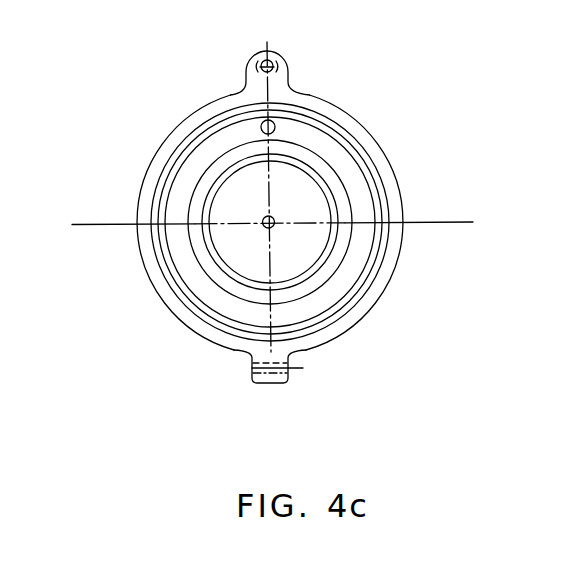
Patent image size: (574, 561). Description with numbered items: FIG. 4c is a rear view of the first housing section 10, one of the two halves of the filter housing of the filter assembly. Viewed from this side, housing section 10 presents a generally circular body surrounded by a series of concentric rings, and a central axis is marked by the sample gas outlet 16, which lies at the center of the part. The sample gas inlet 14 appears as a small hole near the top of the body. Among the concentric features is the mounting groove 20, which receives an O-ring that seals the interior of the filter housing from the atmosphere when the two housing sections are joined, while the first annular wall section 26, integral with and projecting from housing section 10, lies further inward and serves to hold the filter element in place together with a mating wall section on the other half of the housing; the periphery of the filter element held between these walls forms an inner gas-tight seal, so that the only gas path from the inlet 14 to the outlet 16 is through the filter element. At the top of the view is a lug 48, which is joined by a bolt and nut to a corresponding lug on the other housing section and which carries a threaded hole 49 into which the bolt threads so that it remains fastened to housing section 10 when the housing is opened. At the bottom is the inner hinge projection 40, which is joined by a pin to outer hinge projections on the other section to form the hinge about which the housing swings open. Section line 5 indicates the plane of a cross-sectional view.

The section line 5- 5 is at (70, 224).
The first housing section 10 is at (364, 128).
The sample gas inlet 14 is at (276, 127).
The sample gas outlet 16 is at (265, 217).
The mounting groove 20 is at (368, 280).
The first annular wall section 26 is at (208, 275).
The inner hinge projection 40 is at (252, 368).
The lug 48 is at (282, 55).
The threaded hole 49 is at (261, 57).